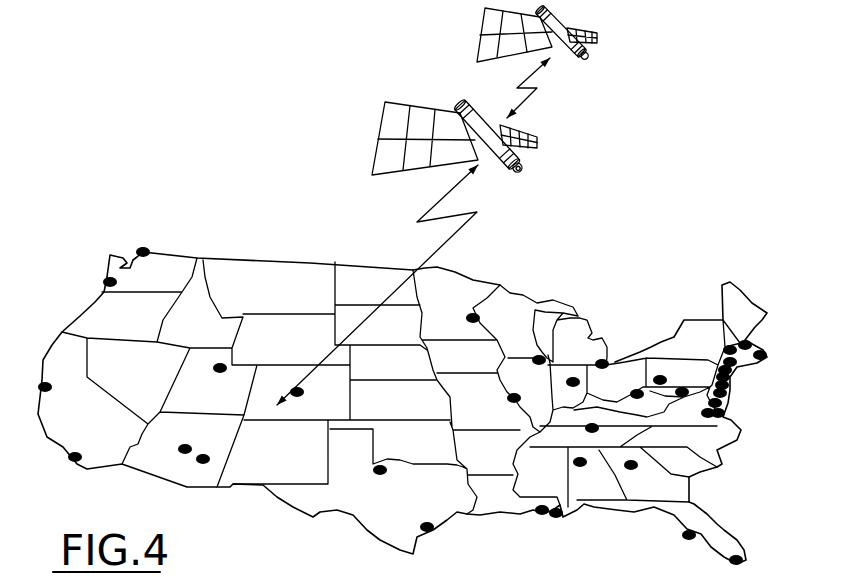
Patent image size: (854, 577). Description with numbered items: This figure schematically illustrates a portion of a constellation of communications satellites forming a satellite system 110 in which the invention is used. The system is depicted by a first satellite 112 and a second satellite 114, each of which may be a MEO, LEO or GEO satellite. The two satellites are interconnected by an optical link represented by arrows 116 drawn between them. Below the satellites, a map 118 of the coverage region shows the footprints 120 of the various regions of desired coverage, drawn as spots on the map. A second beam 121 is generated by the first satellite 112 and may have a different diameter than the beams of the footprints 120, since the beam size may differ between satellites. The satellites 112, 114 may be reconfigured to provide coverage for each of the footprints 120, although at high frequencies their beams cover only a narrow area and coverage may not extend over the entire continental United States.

The satellite system 110 is at (622, 81).
The first satellite 112 is at (556, 18).
The second satellite 114 is at (490, 156).
The optical link 116 is at (517, 88).
The map 118 is at (682, 320).
The footprint 120 is at (150, 250).
The second beam 121 is at (475, 307).